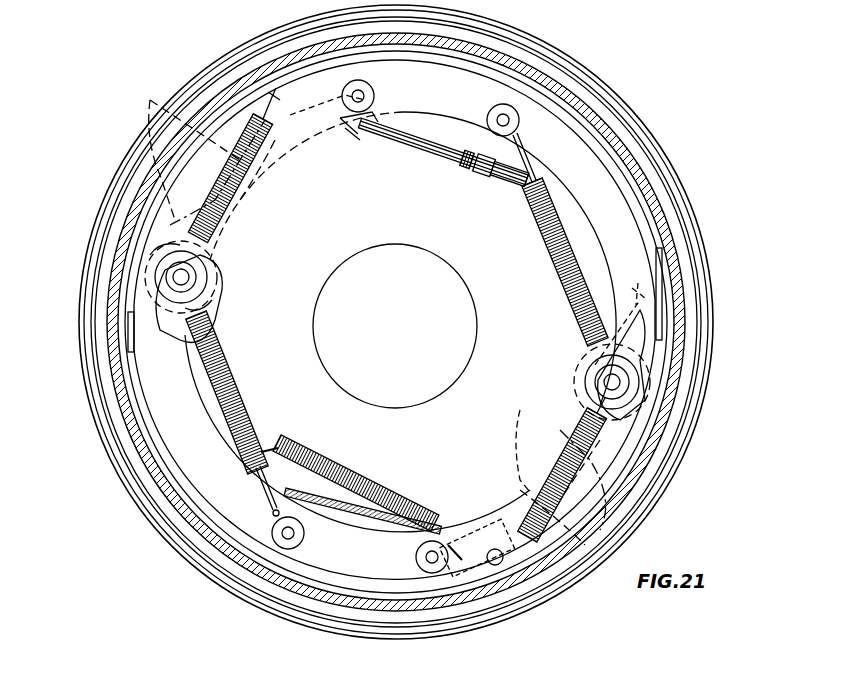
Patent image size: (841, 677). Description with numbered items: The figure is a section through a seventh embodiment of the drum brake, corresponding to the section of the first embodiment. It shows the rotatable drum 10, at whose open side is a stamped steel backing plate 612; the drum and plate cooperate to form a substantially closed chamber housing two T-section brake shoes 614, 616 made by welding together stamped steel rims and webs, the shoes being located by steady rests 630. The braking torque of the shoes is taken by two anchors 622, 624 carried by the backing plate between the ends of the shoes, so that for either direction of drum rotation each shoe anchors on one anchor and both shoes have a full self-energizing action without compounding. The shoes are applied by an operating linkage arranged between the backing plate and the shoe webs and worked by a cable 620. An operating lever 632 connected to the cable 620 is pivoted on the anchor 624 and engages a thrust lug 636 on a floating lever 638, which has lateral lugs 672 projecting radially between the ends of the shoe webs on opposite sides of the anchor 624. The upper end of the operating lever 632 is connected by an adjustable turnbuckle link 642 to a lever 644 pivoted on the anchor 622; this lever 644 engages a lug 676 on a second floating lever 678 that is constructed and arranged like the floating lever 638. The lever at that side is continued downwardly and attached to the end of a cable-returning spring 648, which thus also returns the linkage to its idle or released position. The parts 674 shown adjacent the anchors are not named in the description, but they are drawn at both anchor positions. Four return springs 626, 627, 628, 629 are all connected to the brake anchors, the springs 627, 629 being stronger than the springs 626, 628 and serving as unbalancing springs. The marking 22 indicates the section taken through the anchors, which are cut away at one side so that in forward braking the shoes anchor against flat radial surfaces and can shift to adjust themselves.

The rotatable drum 10 is at (660, 222).
The anchor 22 is at (542, 421).
The backing plate 612 is at (515, 42).
The brake shoe 614 is at (580, 145).
The brake shoe 616 is at (218, 493).
The cable 620 is at (335, 497).
The anchor 622 is at (168, 285).
The anchor 624 is at (630, 378).
The return spring 626 is at (236, 382).
The return spring 627 is at (235, 213).
The return spring 628 is at (560, 280).
The return spring 629 is at (520, 525).
The steady rest 630 is at (368, 118).
The operating lever 632 is at (585, 545).
The thrust lug 636 is at (520, 440).
The floating lever 638 is at (560, 440).
The adjustable turnbuckle link 642 is at (435, 165).
The lever 644 is at (175, 125).
The cable-returning spring 648 is at (302, 452).
The lateral lug 672 is at (172, 276).
The anchor brackets 674 is at (175, 300).
The lug 676 is at (268, 168).
The floating lever 678 is at (170, 225).